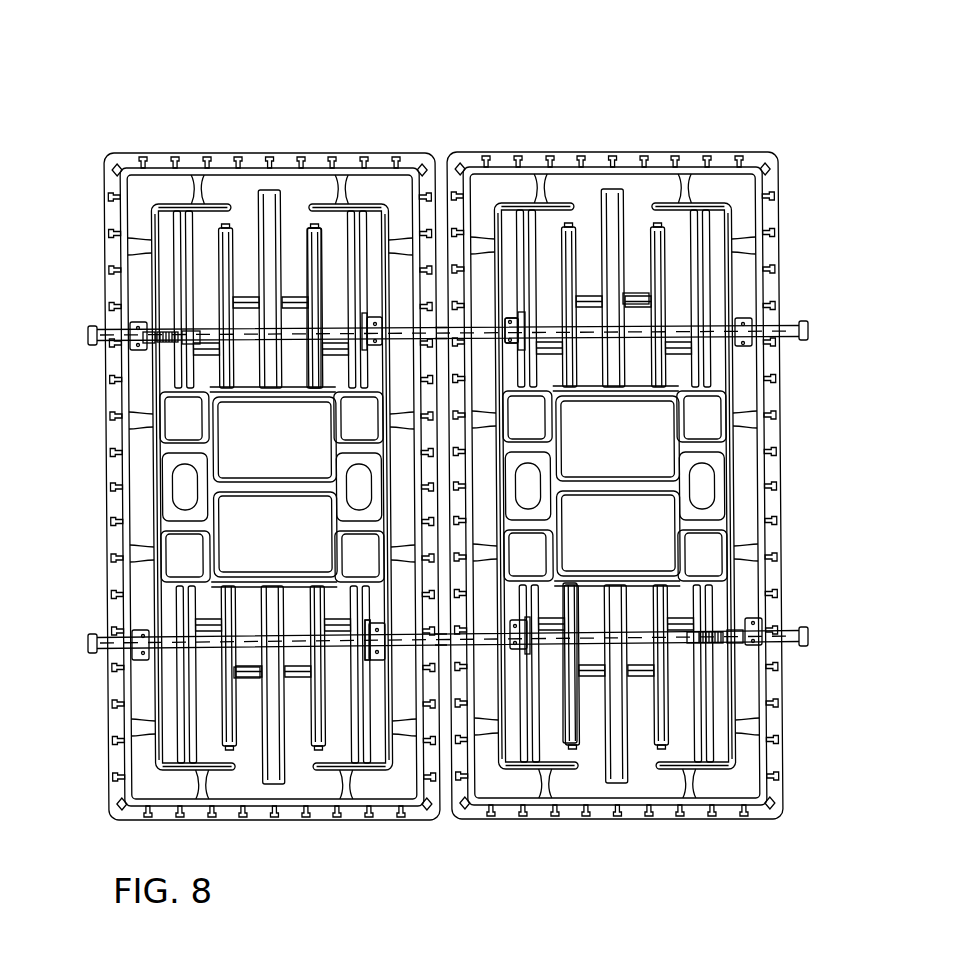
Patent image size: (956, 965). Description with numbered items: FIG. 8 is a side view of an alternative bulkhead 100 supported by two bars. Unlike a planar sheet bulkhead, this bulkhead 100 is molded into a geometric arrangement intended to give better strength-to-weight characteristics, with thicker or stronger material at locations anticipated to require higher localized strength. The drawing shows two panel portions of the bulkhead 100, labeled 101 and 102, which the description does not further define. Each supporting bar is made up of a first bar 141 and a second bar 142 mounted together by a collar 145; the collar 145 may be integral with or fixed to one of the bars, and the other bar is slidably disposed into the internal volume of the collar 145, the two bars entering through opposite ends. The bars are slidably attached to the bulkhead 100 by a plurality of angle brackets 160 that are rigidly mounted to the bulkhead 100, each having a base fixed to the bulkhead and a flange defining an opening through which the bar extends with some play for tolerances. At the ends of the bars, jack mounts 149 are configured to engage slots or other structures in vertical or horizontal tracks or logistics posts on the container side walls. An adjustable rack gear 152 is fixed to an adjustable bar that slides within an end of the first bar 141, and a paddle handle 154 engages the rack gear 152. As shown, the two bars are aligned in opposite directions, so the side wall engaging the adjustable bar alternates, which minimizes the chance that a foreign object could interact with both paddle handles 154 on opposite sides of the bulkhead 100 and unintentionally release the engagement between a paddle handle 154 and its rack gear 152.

The bulkhead 100 is at (305, 152).
The first panel 101 is at (220, 150).
The second panel 102 is at (520, 148).
The first bar 141 is at (322, 330).
The second bar 142 is at (632, 330).
The collar 145 is at (473, 330).
The jack mount 149 is at (88, 334).
The adjustable rack gear 152 is at (147, 343).
The paddle handle 154 is at (215, 332).
The angle bracket 160 is at (512, 315).